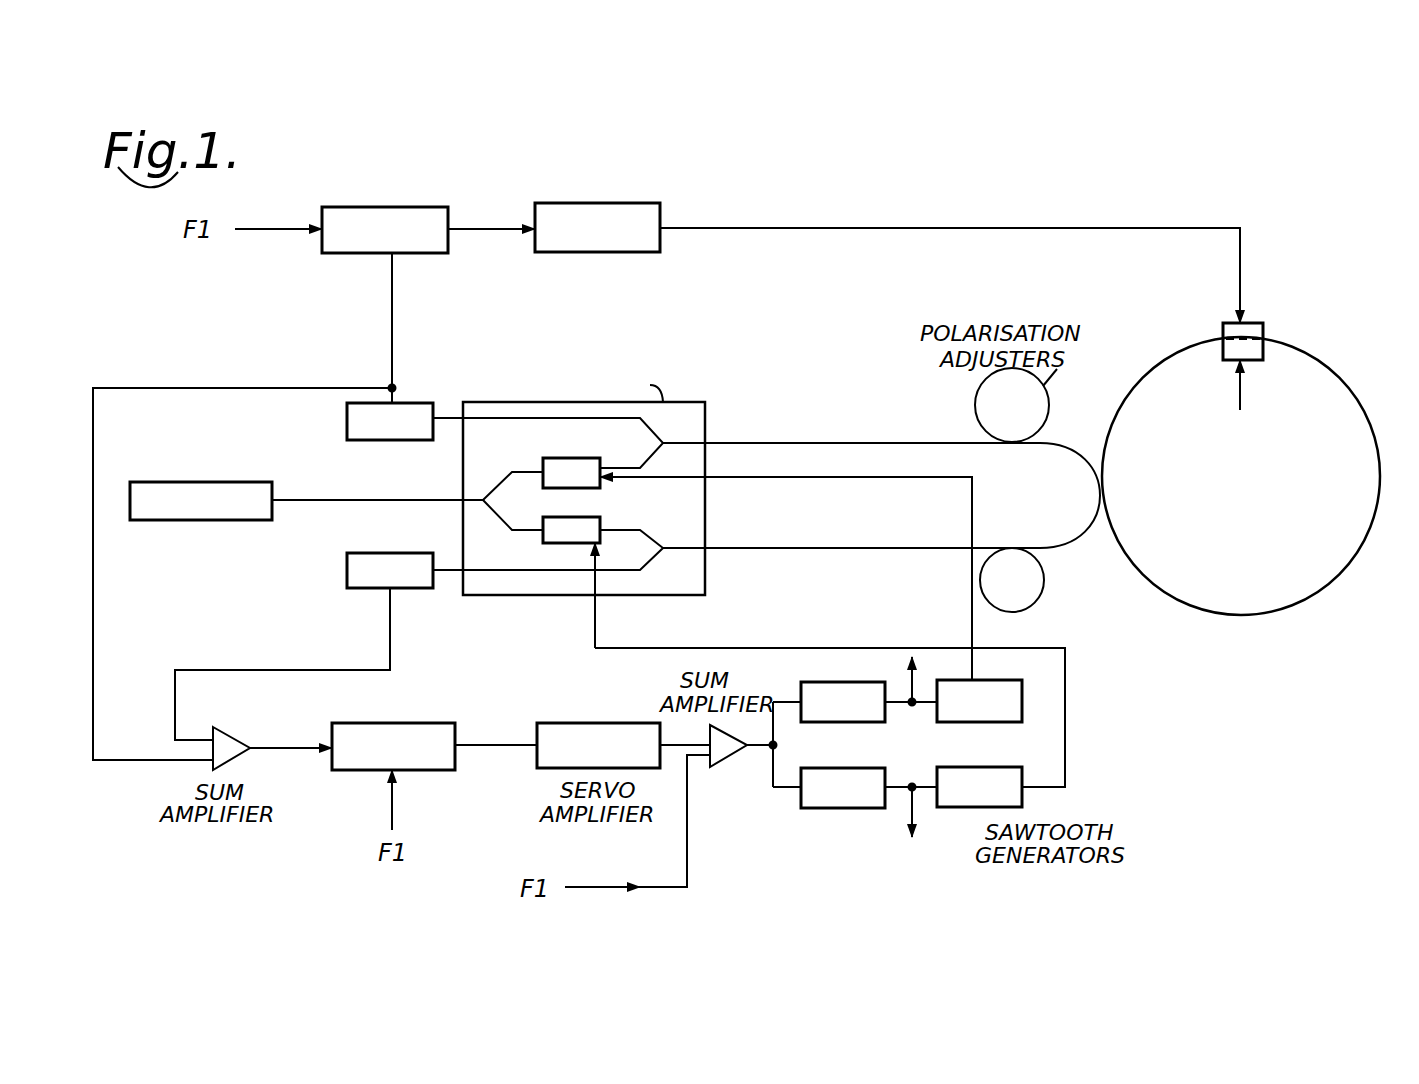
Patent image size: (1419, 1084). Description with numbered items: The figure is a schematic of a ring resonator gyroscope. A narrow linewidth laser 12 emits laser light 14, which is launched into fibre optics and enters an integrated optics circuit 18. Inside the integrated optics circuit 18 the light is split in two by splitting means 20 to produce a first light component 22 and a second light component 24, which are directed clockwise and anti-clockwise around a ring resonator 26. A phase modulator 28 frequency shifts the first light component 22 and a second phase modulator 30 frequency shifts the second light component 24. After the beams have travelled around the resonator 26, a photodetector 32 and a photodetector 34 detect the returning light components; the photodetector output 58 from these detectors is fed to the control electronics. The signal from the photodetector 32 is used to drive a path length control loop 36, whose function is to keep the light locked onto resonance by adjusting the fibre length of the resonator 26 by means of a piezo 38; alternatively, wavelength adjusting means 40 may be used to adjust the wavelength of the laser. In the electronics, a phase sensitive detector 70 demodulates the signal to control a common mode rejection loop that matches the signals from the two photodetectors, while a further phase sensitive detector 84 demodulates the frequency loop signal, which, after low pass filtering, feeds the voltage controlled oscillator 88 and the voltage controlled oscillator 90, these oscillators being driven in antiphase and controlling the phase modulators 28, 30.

The narrow linewidth laser 12 is at (170, 482).
The laser light 14 is at (347, 500).
The integrated optics circuit 18 is at (582, 455).
The splitting means 20 is at (483, 506).
The first light component 22 is at (815, 548).
The second light component 24 is at (805, 443).
The ring resonator 26 is at (1318, 361).
The phase modulator 28 is at (550, 458).
The phase modulator 30 is at (585, 522).
The photodetector 32 is at (426, 403).
The photodetector 34 is at (347, 571).
The path length control loop 36 is at (817, 228).
The piezo 38 is at (1265, 330).
The wavelength adjusting means 40 is at (705, 402).
The photodetector output 58 is at (390, 324).
The phase sensitive detector 70 is at (437, 207).
The phase sensitive detector 84 is at (350, 770).
The voltage controlled oscillator 88 is at (847, 682).
The voltage controlled oscillator 90 is at (835, 810).